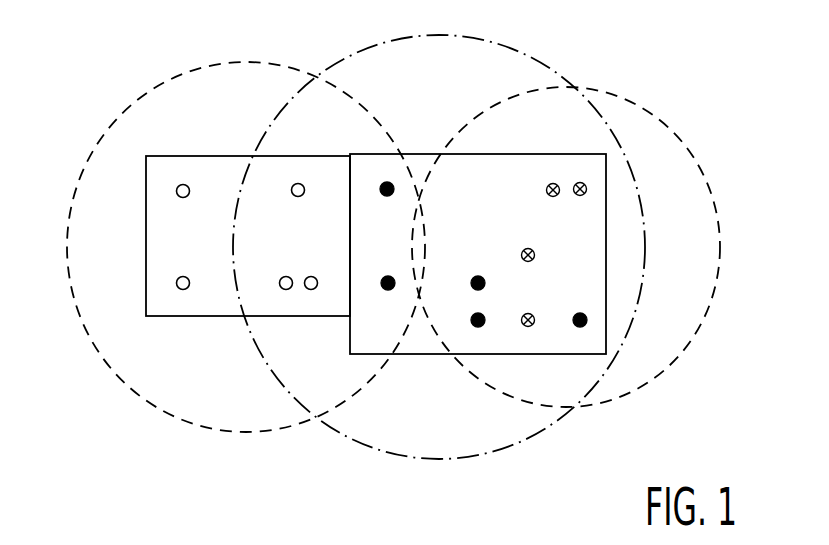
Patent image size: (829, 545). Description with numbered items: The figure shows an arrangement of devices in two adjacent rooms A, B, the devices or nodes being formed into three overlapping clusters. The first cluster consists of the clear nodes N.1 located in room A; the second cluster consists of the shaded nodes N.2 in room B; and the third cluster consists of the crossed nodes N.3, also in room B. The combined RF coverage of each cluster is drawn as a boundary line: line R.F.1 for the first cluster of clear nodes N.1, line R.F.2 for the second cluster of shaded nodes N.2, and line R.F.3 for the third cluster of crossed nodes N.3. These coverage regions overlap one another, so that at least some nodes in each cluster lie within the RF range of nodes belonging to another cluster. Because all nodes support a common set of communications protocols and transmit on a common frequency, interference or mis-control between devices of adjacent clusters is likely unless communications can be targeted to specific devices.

The room A is at (248, 236).
The room B is at (478, 254).
The clear nodes N.1 is at (183, 198).
The shaded nodes N.2 is at (387, 196).
The crossed nodes N.3 is at (578, 196).
The combined RF coverage line of the first cluster R.F.1 is at (160, 410).
The combined RF coverage line of the second cluster R.F.2 is at (362, 449).
The combined RF coverage line of the third cluster R.F.3 is at (685, 138).